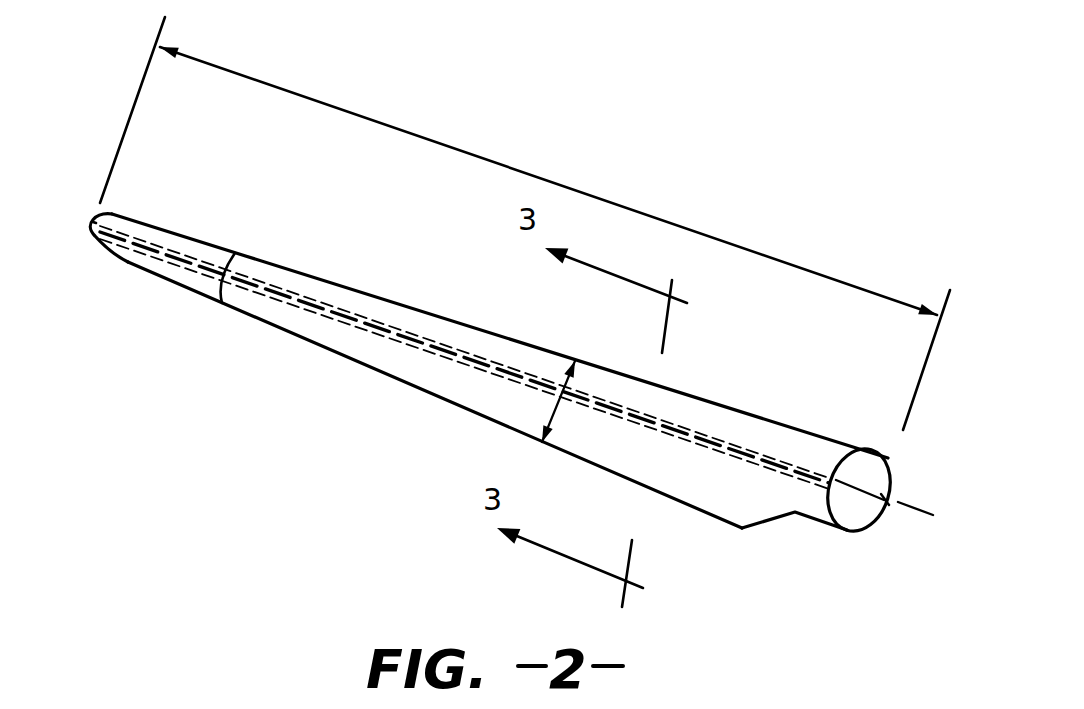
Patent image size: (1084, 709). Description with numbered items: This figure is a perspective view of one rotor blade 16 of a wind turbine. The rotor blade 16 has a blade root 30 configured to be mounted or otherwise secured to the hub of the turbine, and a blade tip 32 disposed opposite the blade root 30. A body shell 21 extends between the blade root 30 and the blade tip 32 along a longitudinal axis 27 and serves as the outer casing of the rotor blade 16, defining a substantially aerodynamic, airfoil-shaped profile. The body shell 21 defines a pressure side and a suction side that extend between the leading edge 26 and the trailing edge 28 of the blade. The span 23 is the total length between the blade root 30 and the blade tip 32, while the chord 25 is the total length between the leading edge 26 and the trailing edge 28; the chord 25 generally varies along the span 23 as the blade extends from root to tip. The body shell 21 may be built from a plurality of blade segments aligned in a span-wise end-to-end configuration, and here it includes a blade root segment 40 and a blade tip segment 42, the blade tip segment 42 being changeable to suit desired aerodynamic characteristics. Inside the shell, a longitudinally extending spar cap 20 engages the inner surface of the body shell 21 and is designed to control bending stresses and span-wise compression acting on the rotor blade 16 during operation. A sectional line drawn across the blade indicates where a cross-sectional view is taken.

The rotor blade 16 is at (495, 313).
The spar cap 20 is at (432, 352).
The body shell 21 is at (347, 337).
The span 23 is at (442, 140).
The chord 25 is at (553, 402).
The leading edge 26 is at (703, 397).
The longitudinal axis 27 is at (95, 223).
The trailing edge 28 is at (700, 512).
The blade root 30 is at (847, 512).
The blade tip 32 is at (93, 222).
The blade root segment 40 is at (774, 414).
The blade tip segment 42 is at (181, 226).